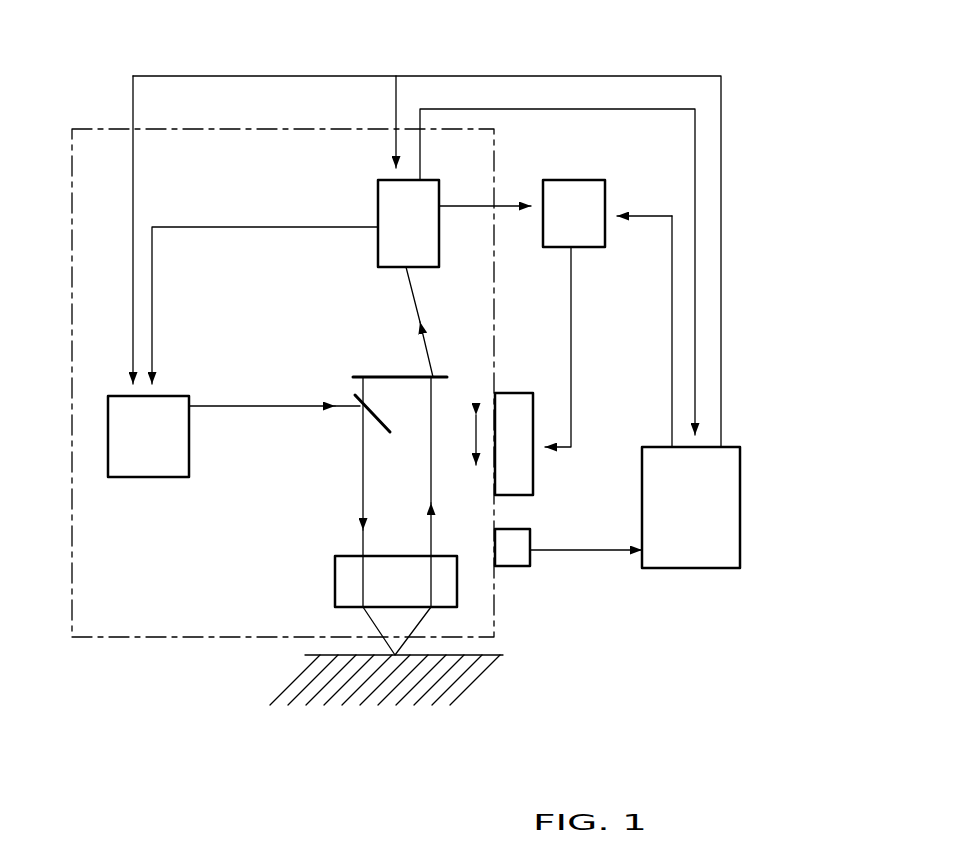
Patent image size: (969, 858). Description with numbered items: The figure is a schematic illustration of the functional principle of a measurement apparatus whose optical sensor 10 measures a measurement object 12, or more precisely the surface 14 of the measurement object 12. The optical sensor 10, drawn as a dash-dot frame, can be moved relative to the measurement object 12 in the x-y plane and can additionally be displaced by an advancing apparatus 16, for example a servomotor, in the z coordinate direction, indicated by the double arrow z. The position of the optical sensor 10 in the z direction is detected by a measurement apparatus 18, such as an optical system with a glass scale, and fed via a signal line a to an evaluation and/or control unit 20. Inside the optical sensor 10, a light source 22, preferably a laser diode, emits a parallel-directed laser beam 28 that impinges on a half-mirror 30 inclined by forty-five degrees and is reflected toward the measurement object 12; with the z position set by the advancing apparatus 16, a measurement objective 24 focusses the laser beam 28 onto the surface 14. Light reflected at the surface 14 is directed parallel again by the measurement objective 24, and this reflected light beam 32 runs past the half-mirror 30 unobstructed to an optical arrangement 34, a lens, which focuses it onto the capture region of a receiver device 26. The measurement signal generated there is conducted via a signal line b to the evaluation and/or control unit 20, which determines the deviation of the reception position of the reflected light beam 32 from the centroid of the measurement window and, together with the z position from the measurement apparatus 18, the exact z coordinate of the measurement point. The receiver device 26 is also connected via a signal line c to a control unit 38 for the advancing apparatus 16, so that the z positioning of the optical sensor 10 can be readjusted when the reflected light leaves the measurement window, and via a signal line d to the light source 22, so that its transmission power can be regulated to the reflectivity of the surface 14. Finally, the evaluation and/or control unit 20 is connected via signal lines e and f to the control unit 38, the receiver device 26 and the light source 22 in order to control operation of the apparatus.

The optical sensor 10 is at (276, 116).
The measurement object 12 is at (493, 692).
The surface 14 is at (488, 655).
The advancing apparatus 16 is at (513, 393).
The measurement apparatus 18 is at (512, 566).
The evaluation and/or control unit 20 is at (705, 568).
The light source 22 is at (140, 477).
The measurement objective 24 is at (335, 578).
The receiver device 26 is at (378, 202).
The laser beam 28 is at (236, 406).
The half-mirror 30 is at (355, 393).
The reflected light beam 32 is at (420, 342).
The optical arrangement 34 is at (437, 373).
The control unit 38 is at (578, 180).
The signal line a is at (595, 550).
The signal line b is at (697, 192).
The signal line c is at (512, 206).
The signal line d is at (190, 227).
The signal line e is at (721, 368).
The signal line f is at (673, 300).
The z coordinate direction z is at (466, 440).